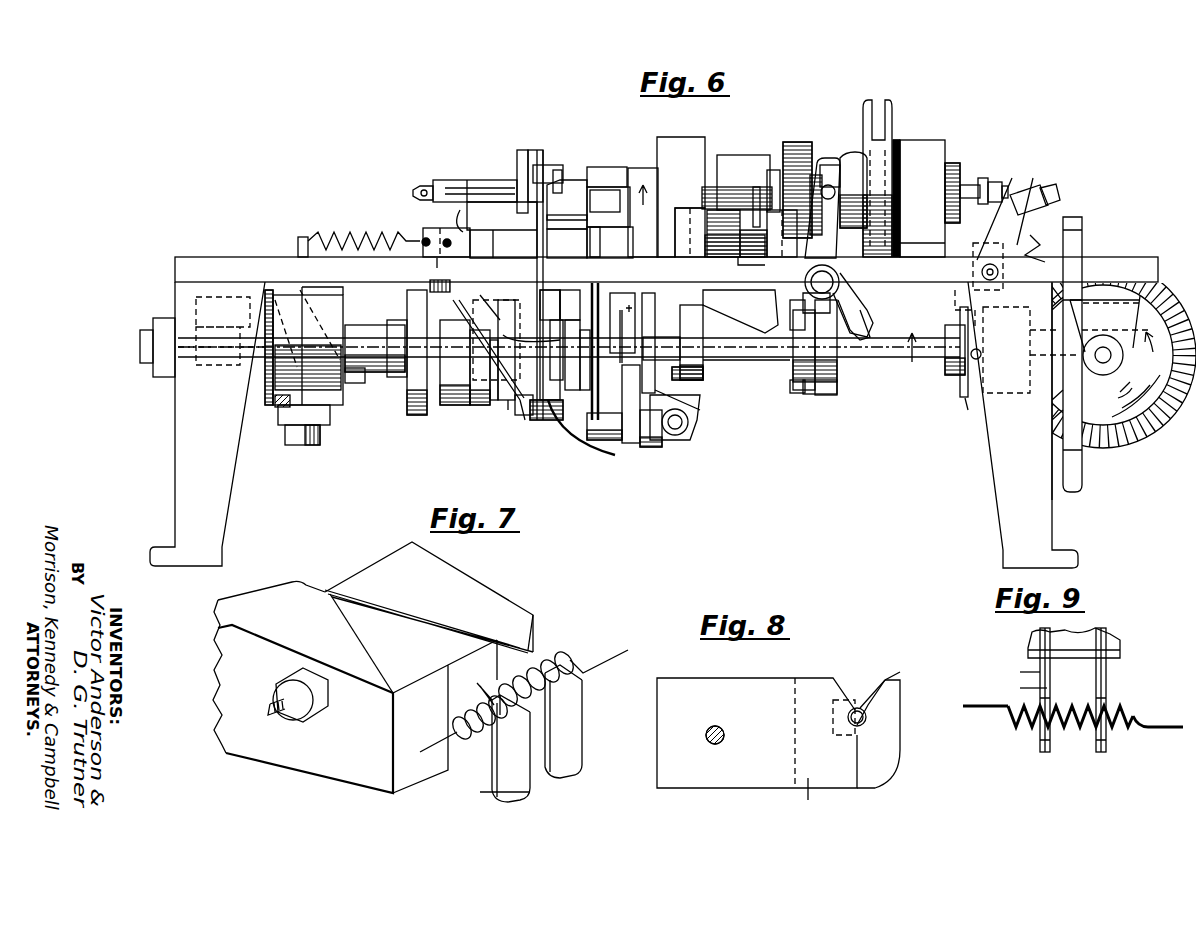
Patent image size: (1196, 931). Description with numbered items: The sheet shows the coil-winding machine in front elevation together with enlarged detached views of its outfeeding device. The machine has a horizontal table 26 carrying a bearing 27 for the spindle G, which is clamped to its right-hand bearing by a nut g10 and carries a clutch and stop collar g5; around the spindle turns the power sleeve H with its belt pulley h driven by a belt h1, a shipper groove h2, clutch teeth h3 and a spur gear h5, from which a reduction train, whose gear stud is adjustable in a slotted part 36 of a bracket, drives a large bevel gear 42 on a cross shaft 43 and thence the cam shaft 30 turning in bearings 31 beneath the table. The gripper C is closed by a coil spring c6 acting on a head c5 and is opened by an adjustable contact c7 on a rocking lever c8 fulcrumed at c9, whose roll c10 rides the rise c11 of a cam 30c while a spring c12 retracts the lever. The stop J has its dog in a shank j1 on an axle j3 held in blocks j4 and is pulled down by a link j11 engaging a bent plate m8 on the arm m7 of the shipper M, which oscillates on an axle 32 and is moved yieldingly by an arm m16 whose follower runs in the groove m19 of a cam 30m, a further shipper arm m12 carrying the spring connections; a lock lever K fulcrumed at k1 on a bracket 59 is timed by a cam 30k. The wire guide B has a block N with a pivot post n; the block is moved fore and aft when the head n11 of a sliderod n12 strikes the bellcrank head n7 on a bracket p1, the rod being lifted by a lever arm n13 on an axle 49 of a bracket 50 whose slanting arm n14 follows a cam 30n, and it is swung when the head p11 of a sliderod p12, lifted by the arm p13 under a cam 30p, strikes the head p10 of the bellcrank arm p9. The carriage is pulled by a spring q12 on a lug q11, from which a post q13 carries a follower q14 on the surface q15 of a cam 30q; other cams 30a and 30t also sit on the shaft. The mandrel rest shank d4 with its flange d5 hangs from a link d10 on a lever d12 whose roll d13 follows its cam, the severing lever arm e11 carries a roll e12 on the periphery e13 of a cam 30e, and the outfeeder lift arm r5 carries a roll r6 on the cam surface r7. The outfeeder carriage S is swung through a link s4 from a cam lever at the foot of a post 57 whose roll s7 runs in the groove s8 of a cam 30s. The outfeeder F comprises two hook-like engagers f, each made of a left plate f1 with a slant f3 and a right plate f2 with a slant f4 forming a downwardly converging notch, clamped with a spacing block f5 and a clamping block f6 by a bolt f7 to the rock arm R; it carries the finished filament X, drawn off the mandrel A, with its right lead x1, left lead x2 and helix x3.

In FIG. 6, the frame beam 26 is at (200, 255).
In FIG. 6, the bracket 27 is at (801, 197).
In FIG. 6, the shaft 30 is at (140, 348).
In FIG. 6, the leg 31 is at (205, 383).
In FIG. 6, the crank disc 32 is at (840, 282).
In FIG. 6, the bearing block 36 is at (325, 418).
In FIG. 6, the gear wheel 42 is at (1150, 425).
In FIG. 6, the gear hub 43 is at (1113, 358).
In FIG. 6, the bracket 49 is at (645, 445).
In FIG. 6, the plate 50 is at (508, 268).
In FIG. 6, the bearing cap 57 is at (296, 437).
In FIG. 6, the lever 59 is at (700, 388).
In FIG. 6, the pulley 30s is at (335, 290).
In FIG. 6, the plate 30q is at (407, 300).
In FIG. 6, the cylinder 30e is at (395, 325).
In FIG. 6, the shaft portion 30a is at (531, 329).
In FIG. 6, the block 30n is at (612, 320).
In FIG. 6, the collar 30t is at (470, 355).
In FIG. 6, the collar 30k is at (705, 383).
In FIG. 6, the collar 30m is at (795, 395).
In FIG. 6, the block 30p is at (675, 445).
In FIG. 6, the collar 30c is at (966, 400).
In FIG. 6, the spring q12 is at (348, 232).
In FIG. 6, the block q11 is at (428, 238).
In FIG. 6, the pin q13 is at (437, 267).
In FIG. 6, the pin q14 is at (437, 280).
In FIG. 6, the collar q15 is at (398, 378).
In FIG. 6, the receptacle block R is at (437, 180).
In FIG. 7, the receptacle block R is at (355, 687).
In FIG. 9, the receptacle block R is at (1028, 642).
In FIG. 6, the feeler F is at (413, 188).
In FIG. 7, the feeler F is at (540, 805).
In FIG. 9, the feeler F is at (1102, 762).
In FIG. 6, the support S is at (458, 216).
In FIG. 6, the flange B is at (517, 160).
In FIG. 6, the rod p1 is at (522, 150).
In FIG. 6, the nut n7 is at (545, 160).
In FIG. 6, the plate n11 is at (560, 165).
In FIG. 6, the block n is at (595, 165).
In FIG. 6, the unit N is at (575, 190).
In FIG. 6, the unit C is at (600, 195).
In FIG. 6, the block p9 is at (605, 201).
In FIG. 6, the pin p10 is at (600, 235).
In FIG. 6, the block p11 is at (585, 240).
In FIG. 6, the guide G is at (640, 170).
In FIG. 6, the unit J is at (737, 182).
In FIG. 6, the rod j1 is at (757, 187).
In FIG. 6, the block j3 is at (737, 233).
In FIG. 6, the block j4 is at (736, 232).
In FIG. 6, the link j11 is at (763, 251).
In FIG. 6, the gear g5 is at (727, 163).
In FIG. 6, the gear h3 is at (790, 150).
In FIG. 6, the pinion h5 is at (805, 148).
In FIG. 6, the lever h2 is at (830, 185).
In FIG. 6, the unit H is at (853, 200).
In FIG. 6, the pulley h1 is at (880, 110).
In FIG. 6, the shaft h is at (900, 140).
In FIG. 6, the gear g10 is at (955, 165).
In FIG. 6, the collar c5 is at (1002, 185).
In FIG. 6, the collar c6 is at (983, 180).
In FIG. 6, the arm c7 is at (1030, 190).
In FIG. 6, the pin c8 is at (1052, 190).
In FIG. 6, the pivot c9 is at (1005, 272).
In FIG. 6, the collar c10 is at (957, 375).
In FIG. 6, the link c11 is at (961, 309).
In FIG. 6, the lever c12 is at (1018, 220).
In FIG. 6, the crank arm M is at (862, 305).
In FIG. 6, the block m7 is at (785, 309).
In FIG. 6, the lever m8 is at (740, 311).
In FIG. 6, the arm m12 is at (872, 322).
In FIG. 6, the bar m16 is at (800, 318).
In FIG. 6, the collar m19 is at (825, 400).
In FIG. 6, the collar s4 is at (368, 385).
In FIG. 6, the pad s7 is at (278, 405).
In FIG. 6, the plate s8 is at (265, 378).
In FIG. 6, the block d4 is at (550, 291).
In FIG. 6, the block d5 is at (572, 291).
In FIG. 6, the rod d10 is at (478, 310).
In FIG. 6, the block d12 is at (546, 421).
In FIG. 6, the plate d13 is at (579, 359).
In FIG. 6, the plate e11 is at (490, 402).
In FIG. 6, the collar e12 is at (468, 400).
In FIG. 6, the collar e13 is at (468, 405).
In FIG. 6, the block r5 is at (518, 408).
In FIG. 6, the pin r6 is at (508, 405).
In FIG. 6, the plate r7 is at (500, 402).
In FIG. 6, the pin n12 is at (528, 418).
In FIG. 6, the arm n13 is at (580, 448).
In FIG. 6, the rod n14 is at (615, 330).
In FIG. 6, the plate p12 is at (555, 420).
In FIG. 6, the block p13 is at (620, 440).
In FIG. 6, the roller k1 is at (690, 430).
In FIG. 6, the bracket K is at (689, 415).
In FIG. 7, the finger f is at (585, 713).
In FIG. 8, the finger f is at (813, 678).
In FIG. 9, the finger f is at (988, 700).
In FIG. 7, the finger leg f1 is at (470, 775).
In FIG. 8, the finger leg f1 is at (812, 795).
In FIG. 9, the finger leg f1 is at (1021, 669).
In FIG. 7, the finger leg f2 is at (500, 795).
In FIG. 8, the finger leg f2 is at (878, 740).
In FIG. 9, the finger leg f2 is at (1025, 687).
In FIG. 7, the coil spring f3 is at (478, 700).
In FIG. 8, the coil spring f3 is at (833, 710).
In FIG. 8, the slot f4 is at (874, 702).
In FIG. 7, the bar f5 is at (429, 597).
In FIG. 9, the bar f5 is at (1085, 640).
In FIG. 7, the bar f6 is at (505, 618).
In FIG. 9, the bar f6 is at (1112, 652).
In FIG. 7, the screw f7 is at (278, 716).
In FIG. 8, the screw f7 is at (722, 728).
In FIG. 7, the wire X is at (570, 648).
In FIG. 8, the wire X is at (882, 678).
In FIG. 9, the wire X is at (1158, 712).
In FIG. 8, the pivot A is at (860, 705).
In FIG. 9, the wire end x1 is at (1148, 728).
In FIG. 9, the wire end x2 is at (985, 720).
In FIG. 9, the wire coil x3 is at (1025, 720).